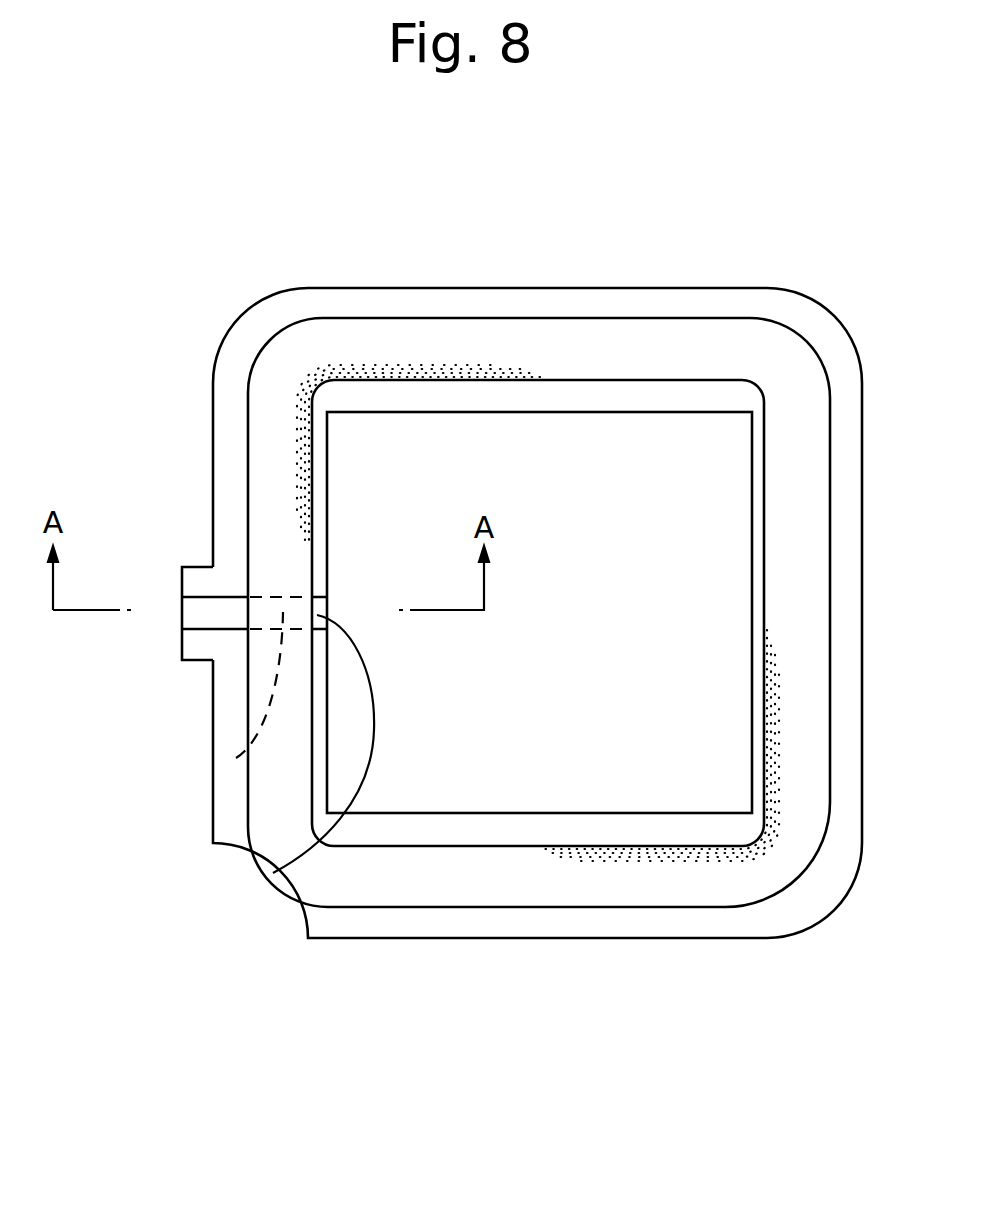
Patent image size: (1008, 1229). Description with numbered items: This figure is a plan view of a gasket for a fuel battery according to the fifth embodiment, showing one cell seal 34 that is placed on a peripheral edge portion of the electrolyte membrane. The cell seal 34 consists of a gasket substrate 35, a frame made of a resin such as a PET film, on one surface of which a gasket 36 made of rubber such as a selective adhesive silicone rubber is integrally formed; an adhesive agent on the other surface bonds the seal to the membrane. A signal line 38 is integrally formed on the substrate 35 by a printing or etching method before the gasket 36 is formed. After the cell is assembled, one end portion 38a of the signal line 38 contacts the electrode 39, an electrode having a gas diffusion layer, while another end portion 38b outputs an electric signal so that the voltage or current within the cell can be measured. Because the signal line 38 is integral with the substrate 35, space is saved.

The cell seal 34 is at (309, 284).
The gasket substrate 35 is at (242, 358).
The gasket 36 is at (470, 875).
The signal line 38 is at (236, 758).
The one end portion 38a is at (273, 873).
The another end portion 38b is at (197, 612).
The electrode 39 is at (612, 753).